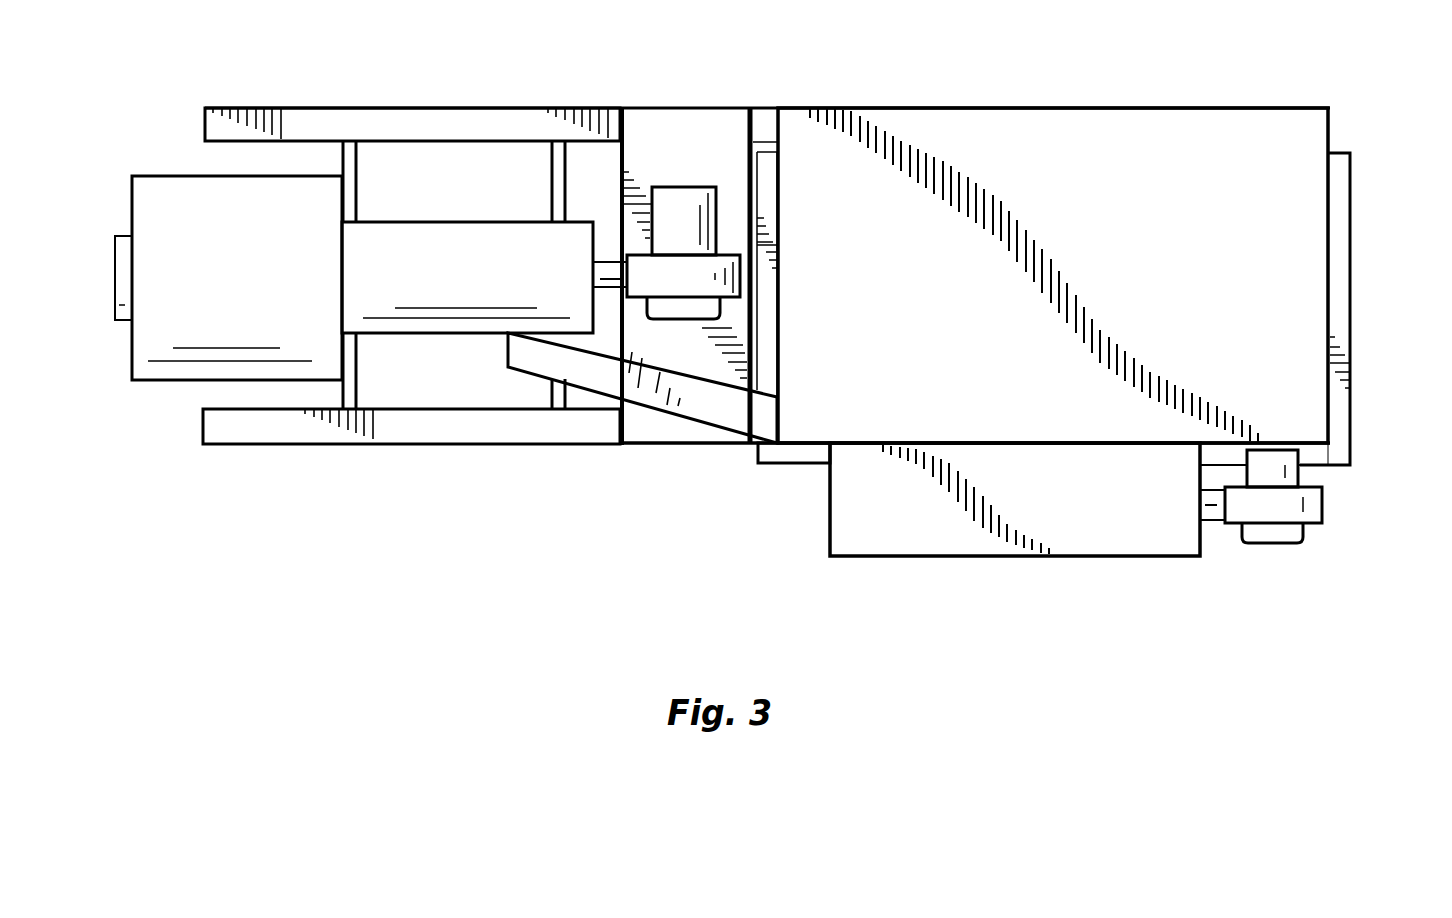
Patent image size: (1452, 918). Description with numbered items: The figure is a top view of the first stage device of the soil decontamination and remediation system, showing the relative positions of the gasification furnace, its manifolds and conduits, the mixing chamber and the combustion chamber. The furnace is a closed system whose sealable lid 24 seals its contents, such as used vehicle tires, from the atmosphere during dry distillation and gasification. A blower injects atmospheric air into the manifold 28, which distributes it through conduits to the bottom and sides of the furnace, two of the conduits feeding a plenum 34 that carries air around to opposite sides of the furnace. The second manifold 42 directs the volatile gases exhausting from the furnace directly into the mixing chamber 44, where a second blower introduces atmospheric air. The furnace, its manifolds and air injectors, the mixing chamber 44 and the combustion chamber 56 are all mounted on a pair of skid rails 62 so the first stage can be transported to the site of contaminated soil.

The sealable lid 24 is at (1093, 243).
The manifold 28 is at (1052, 513).
The plenum 34 is at (810, 468).
The second manifold 42 is at (596, 368).
The mixing chamber 44 is at (440, 255).
The combustion chamber 56 is at (165, 175).
The skid rails 62 is at (320, 127).